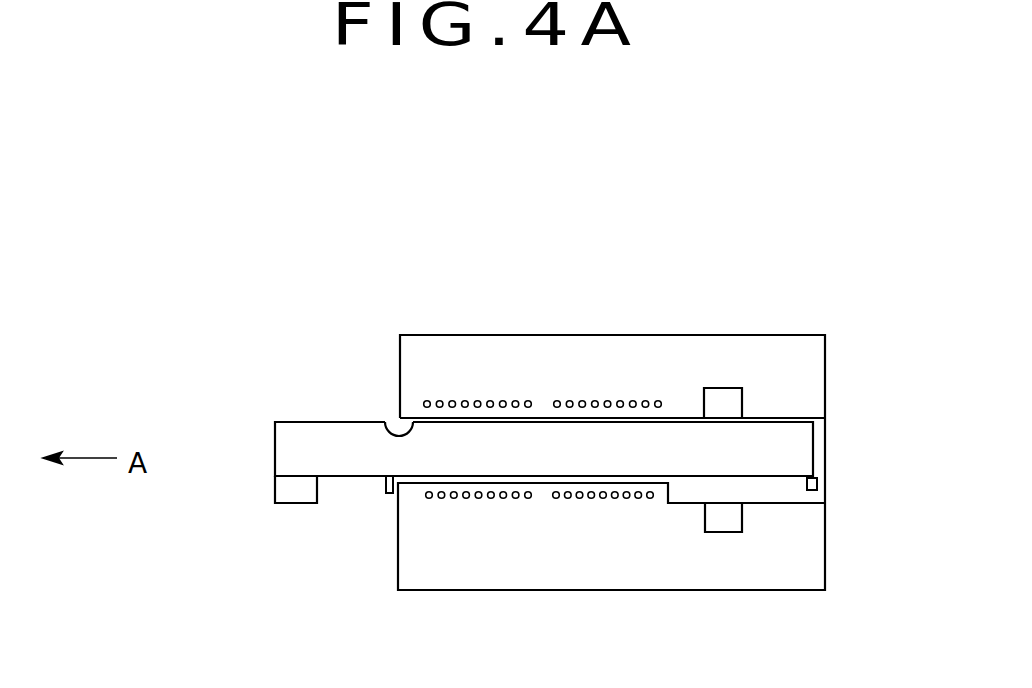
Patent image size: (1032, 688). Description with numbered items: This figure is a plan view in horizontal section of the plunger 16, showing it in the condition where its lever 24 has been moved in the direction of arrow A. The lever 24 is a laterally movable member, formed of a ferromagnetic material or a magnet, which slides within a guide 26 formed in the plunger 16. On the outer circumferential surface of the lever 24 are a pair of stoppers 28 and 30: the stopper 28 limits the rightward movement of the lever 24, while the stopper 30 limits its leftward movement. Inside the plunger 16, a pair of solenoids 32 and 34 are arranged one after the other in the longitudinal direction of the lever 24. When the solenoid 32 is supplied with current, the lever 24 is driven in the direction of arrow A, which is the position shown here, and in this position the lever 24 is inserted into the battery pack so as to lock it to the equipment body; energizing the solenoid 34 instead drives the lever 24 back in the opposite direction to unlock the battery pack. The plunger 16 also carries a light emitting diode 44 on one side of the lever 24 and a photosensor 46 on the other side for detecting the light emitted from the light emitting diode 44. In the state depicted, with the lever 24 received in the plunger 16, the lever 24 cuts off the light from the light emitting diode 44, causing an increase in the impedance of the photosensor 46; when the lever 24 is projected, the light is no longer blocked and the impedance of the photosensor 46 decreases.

The plunger 16 is at (773, 336).
The lever 24 is at (275, 422).
The guide 26 is at (387, 427).
The stopper 28 is at (391, 497).
The stopper 30 is at (817, 484).
The solenoid 32 is at (537, 392).
The solenoid 34 is at (664, 391).
The light emitting diode 44 is at (716, 388).
The photosensor 46 is at (731, 532).